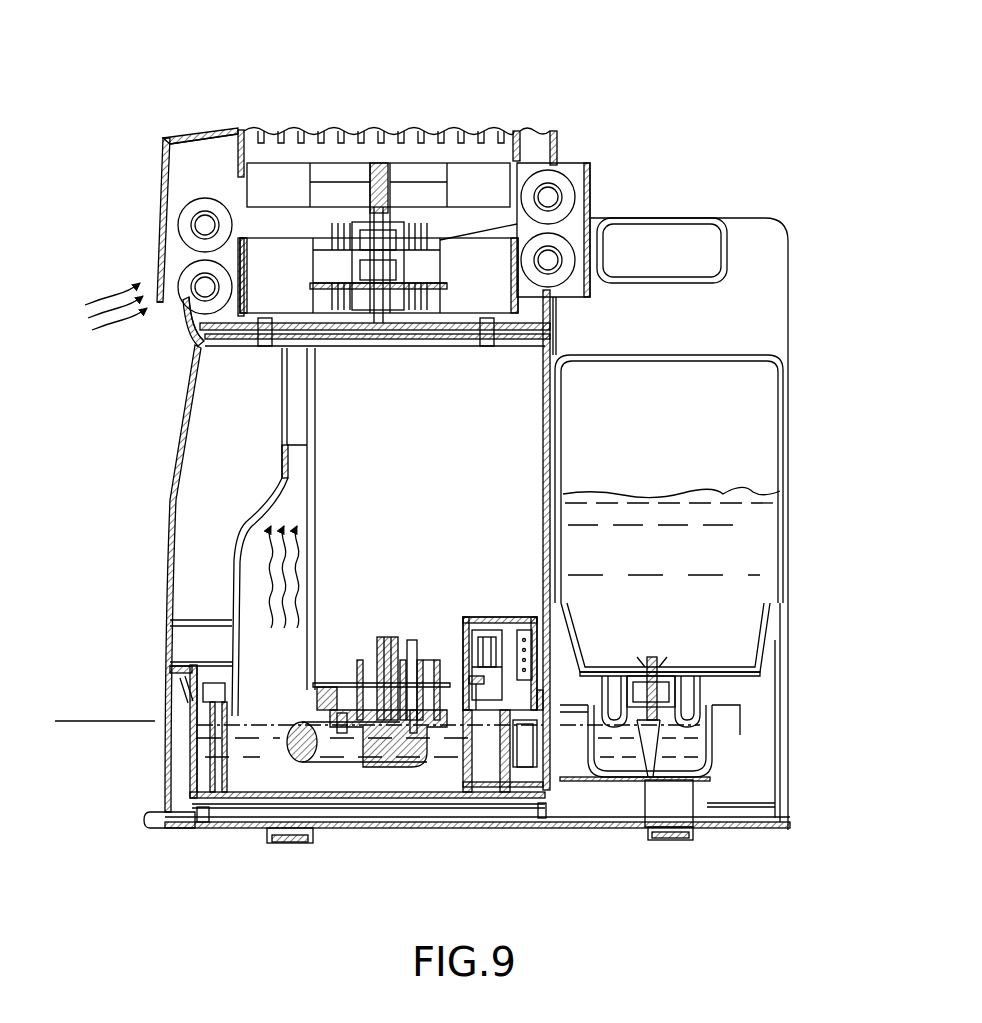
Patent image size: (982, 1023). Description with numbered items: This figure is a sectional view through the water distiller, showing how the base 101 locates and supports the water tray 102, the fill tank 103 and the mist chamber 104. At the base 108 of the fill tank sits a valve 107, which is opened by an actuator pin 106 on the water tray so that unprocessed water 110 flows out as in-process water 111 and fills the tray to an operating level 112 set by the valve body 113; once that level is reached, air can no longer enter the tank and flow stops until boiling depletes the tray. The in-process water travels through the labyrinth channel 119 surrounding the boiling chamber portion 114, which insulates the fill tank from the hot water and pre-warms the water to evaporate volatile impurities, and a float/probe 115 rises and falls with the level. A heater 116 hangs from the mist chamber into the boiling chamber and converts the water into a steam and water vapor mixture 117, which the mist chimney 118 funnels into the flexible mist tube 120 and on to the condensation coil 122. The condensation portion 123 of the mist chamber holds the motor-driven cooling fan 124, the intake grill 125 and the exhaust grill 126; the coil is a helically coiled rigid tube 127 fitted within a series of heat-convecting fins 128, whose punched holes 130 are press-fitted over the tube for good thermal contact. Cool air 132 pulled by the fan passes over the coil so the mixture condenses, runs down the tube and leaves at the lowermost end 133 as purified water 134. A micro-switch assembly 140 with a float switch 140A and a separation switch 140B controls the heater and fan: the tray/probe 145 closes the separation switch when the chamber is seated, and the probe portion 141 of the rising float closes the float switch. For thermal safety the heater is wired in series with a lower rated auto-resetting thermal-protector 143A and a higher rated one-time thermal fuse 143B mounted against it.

The base 101 is at (794, 762).
The water tray 102 is at (186, 749).
The fill tank 103 is at (792, 325).
The mist chamber 104 is at (560, 130).
The actuator pin 106 is at (676, 754).
The valve 107 is at (660, 656).
The base of the fill tank 108 is at (738, 679).
The unprocessed water 110 is at (783, 482).
The in-process water 111 is at (257, 716).
The operating level 112 is at (77, 718).
The valve body 113 is at (709, 703).
The boiling chamber portion 114 is at (243, 767).
The float/probe 115 is at (527, 775).
The heater 116 is at (332, 772).
The steam and water vapor mixture 117 is at (258, 548).
The mist chimney 118 is at (240, 515).
The labyrinth channel 119 is at (203, 781).
The mist tube 120 is at (276, 413).
The condensation coil 122 is at (182, 204).
The condensation portion 123 is at (163, 138).
The motor-driven cooling fan 124 is at (424, 157).
The intake grill 125 is at (180, 328).
The exhaust grill 126 is at (330, 126).
The helically coiled rigid tube 127 is at (198, 280).
The heat-convecting fins 128 is at (230, 190).
The holes 130 is at (182, 228).
The cool air 132 is at (97, 288).
The lowermost end 133 is at (188, 299).
The purified water 134 is at (203, 287).
The micro-switch assembly 140 is at (492, 610).
The float switch 140A is at (524, 620).
The separation switch 140B is at (483, 620).
The probe portion 141 is at (543, 690).
The lower rated thermal-protector 143A is at (372, 657).
The higher rated thermal-protector 143B is at (401, 656).
The tray/probe 145 is at (475, 680).